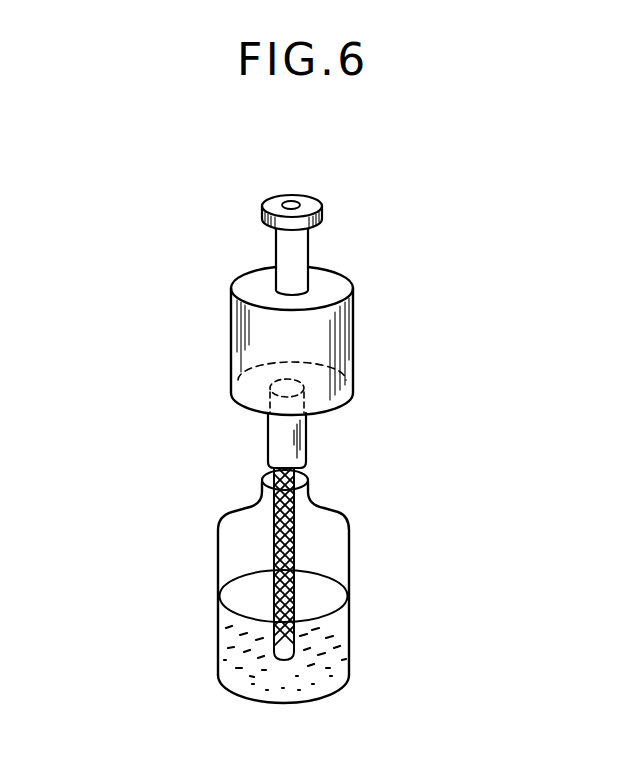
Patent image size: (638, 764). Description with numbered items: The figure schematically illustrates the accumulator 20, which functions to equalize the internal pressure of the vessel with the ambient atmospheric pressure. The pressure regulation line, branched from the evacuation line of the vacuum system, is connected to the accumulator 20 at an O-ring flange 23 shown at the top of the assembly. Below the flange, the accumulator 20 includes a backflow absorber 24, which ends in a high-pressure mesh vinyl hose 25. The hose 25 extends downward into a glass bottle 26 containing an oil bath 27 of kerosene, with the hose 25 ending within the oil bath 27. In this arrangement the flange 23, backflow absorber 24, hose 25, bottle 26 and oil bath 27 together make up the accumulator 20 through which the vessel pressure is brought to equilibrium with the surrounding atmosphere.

The accumulator 20 is at (210, 332).
The O-ring flange 23 is at (322, 201).
The backflow absorber 24 is at (342, 342).
The high-pressure mesh vinyl hose 25 is at (298, 554).
The glass bottle 26 is at (217, 548).
The oil bath 27 is at (340, 666).